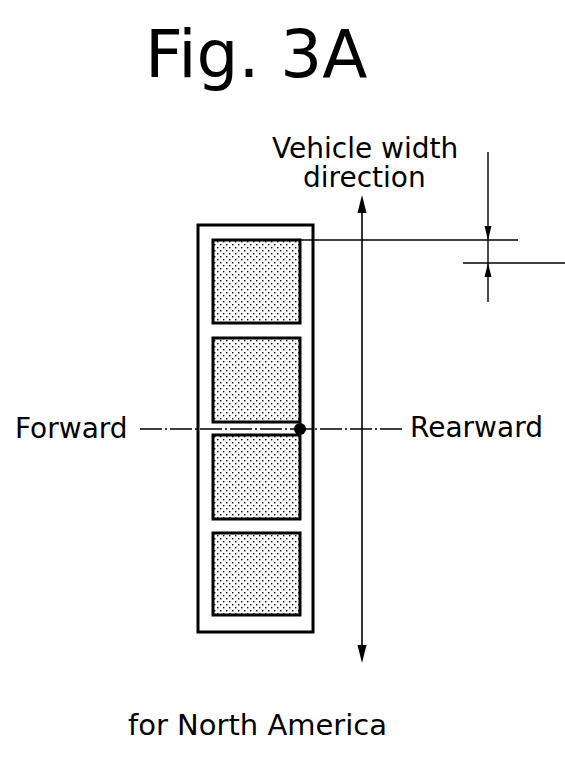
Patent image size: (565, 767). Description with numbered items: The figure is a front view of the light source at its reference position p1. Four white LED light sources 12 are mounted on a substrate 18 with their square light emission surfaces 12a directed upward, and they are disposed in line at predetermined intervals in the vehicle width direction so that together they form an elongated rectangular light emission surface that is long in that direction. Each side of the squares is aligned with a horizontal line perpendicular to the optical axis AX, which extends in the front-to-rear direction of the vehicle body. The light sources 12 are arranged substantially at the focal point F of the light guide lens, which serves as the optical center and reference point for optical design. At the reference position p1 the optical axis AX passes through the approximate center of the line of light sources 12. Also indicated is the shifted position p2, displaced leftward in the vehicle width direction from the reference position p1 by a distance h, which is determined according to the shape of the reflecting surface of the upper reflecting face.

The white LED light source 12 is at (213, 258).
The light emission surface 12a is at (222, 274).
The substrate 18 is at (233, 230).
The focal point F is at (303, 426).
The optical axis AX is at (148, 429).
The reference position p1 is at (405, 243).
The shifted position p2 is at (548, 266).
The distance h is at (478, 227).